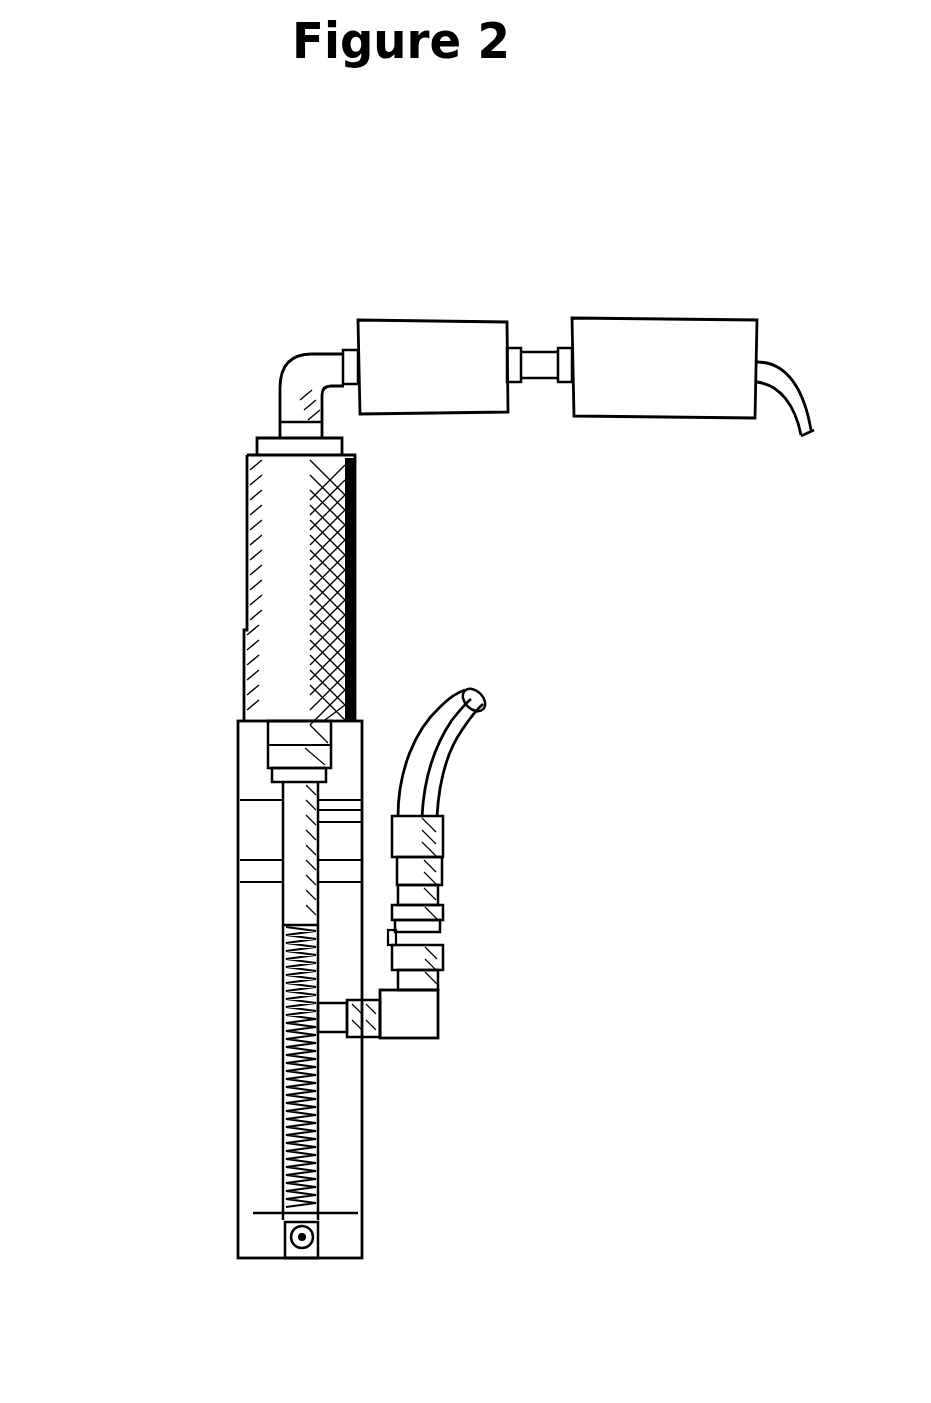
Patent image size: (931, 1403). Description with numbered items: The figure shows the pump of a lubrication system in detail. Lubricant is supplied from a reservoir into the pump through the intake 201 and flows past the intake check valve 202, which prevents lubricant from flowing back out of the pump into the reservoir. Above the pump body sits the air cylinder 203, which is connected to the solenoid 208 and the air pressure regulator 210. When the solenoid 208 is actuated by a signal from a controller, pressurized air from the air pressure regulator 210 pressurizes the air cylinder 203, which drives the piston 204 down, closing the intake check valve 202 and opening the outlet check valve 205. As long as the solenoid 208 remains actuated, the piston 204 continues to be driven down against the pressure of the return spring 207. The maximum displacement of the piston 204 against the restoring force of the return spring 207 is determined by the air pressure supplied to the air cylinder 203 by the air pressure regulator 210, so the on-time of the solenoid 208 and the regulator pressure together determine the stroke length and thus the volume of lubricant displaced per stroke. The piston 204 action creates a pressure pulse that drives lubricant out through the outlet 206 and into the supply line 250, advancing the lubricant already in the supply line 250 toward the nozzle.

The intake 201 is at (292, 1272).
The intake check valve 202 is at (312, 1240).
The air cylinder 203 is at (362, 624).
The piston 204 is at (295, 840).
The outlet check valve 205 is at (420, 950).
The outlet 206 is at (440, 824).
The return spring 207 is at (300, 1090).
The solenoid 208 is at (423, 414).
The air pressure regulator 210 is at (650, 418).
The supply line 250 is at (480, 716).